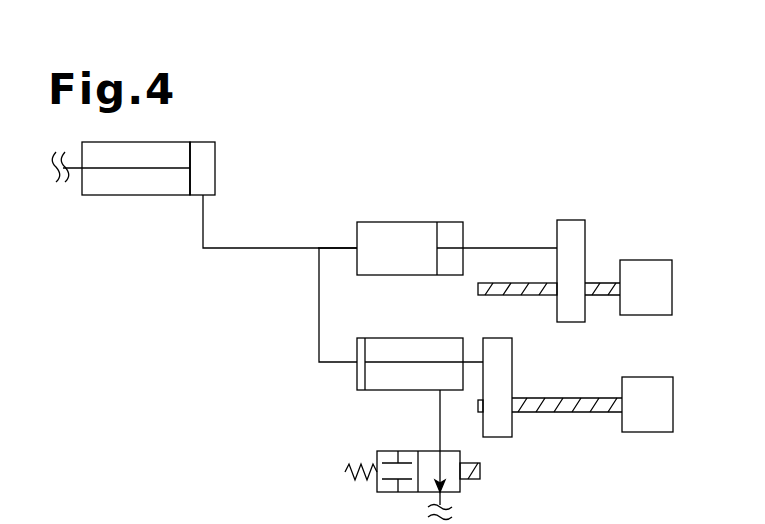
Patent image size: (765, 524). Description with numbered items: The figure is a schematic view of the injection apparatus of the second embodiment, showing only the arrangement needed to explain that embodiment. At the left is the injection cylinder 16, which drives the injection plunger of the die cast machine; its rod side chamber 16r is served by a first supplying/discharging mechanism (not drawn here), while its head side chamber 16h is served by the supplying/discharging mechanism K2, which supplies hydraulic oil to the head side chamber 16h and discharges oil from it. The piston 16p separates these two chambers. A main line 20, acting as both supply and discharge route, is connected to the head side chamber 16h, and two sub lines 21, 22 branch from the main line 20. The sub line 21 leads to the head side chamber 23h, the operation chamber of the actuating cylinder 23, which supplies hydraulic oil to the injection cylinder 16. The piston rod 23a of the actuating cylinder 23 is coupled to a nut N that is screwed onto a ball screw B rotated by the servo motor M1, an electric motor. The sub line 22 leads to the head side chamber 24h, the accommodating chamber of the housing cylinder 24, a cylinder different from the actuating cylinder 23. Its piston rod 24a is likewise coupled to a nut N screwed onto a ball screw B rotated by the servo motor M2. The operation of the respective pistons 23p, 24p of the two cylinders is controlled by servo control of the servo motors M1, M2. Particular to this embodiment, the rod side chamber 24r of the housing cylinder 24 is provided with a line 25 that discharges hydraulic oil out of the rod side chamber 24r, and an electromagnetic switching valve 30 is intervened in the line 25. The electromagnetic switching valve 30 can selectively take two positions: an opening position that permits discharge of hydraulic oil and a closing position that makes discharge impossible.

The injection cylinder 16 is at (142, 197).
The head side chamber 16h is at (203, 160).
The piston 16p is at (190, 178).
The rod side chamber 16r is at (120, 187).
The main line 20 is at (257, 248).
The sub line 21 is at (332, 245).
The sub line 22 is at (318, 333).
The actuating cylinder 23 is at (408, 220).
The head side chamber 23h is at (377, 230).
The piston 23p is at (440, 237).
The piston rod 23a is at (513, 247).
The supplying/discharging mechanism K2 is at (494, 189).
The nut N is at (570, 218).
The ball screw B is at (500, 278).
The servo motor M1 is at (643, 257).
The servo motor M2 is at (645, 375).
The housing cylinder 24 is at (412, 335).
The piston 24p is at (363, 353).
The piston rod 24a is at (453, 360).
The head side chamber 24h is at (358, 375).
The rod side chamber 24r is at (387, 382).
The line 25 is at (440, 433).
The electromagnetic switching valve 30 is at (385, 444).